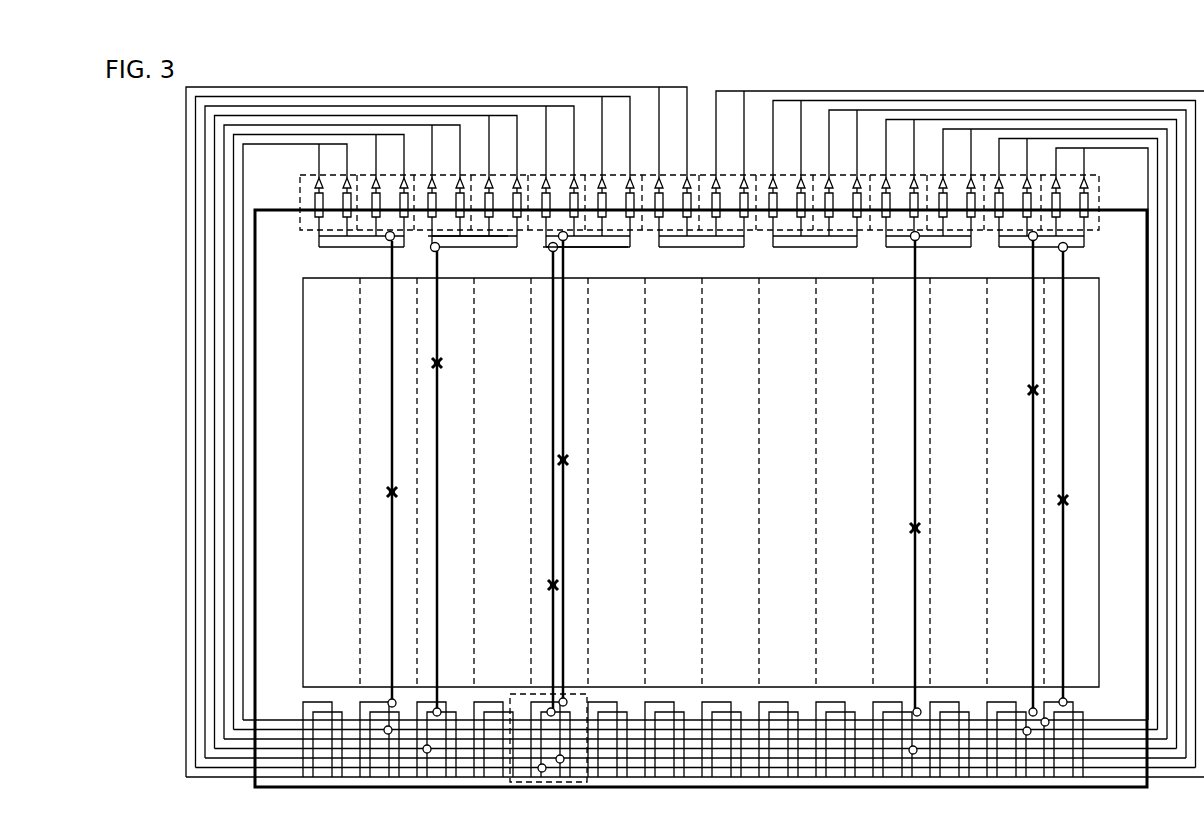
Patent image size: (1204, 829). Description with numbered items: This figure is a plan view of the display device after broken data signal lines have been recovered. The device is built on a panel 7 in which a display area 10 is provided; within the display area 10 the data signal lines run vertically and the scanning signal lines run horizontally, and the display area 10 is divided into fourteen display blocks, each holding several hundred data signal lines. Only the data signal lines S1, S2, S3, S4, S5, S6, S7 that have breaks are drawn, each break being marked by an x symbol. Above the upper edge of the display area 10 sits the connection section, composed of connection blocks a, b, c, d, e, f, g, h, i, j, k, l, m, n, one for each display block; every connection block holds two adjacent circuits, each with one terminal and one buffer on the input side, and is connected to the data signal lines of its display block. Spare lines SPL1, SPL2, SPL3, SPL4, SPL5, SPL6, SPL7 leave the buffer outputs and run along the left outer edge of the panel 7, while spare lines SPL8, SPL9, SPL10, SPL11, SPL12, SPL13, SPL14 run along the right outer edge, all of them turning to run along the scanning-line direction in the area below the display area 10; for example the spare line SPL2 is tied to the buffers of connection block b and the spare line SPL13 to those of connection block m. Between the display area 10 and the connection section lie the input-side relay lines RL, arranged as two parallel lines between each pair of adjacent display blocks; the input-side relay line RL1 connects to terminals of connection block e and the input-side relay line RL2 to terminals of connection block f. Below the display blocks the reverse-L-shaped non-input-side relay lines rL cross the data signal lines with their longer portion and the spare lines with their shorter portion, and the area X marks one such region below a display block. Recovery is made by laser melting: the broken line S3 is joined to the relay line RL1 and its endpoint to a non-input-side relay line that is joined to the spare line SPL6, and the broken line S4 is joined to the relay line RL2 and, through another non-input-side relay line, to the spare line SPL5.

The spare line SPL1 is at (250, 144).
The spare line SPL2 is at (312, 134).
The spare line SPL3 is at (375, 125).
The spare line SPL4 is at (437, 116).
The spare line SPL5 is at (500, 106).
The spare line SPL6 is at (563, 96).
The spare line SPL7 is at (612, 87).
The spare line SPL8 is at (768, 91).
The spare line SPL9 is at (810, 100).
The spare line SPL10 is at (878, 110).
The spare line SPL11 is at (950, 120).
The spare line SPL12 is at (1014, 129).
The spare line SPL13 is at (1082, 138).
The spare line SPL14 is at (1150, 148).
The connection block a is at (333, 201).
The connection block b is at (390, 201).
The connection block c is at (446, 201).
The connection block d is at (503, 201).
The connection block e is at (560, 201).
The connection block f is at (616, 201).
The connection block g is at (673, 201).
The connection block h is at (730, 201).
The connection block i is at (787, 201).
The connection block j is at (843, 201).
The connection block k is at (900, 201).
The connection block l is at (957, 201).
The connection block m is at (1013, 201).
The connection block n is at (1070, 201).
The panel 7 is at (1123, 209).
The input-side relay lines RL is at (312, 228).
The input-side relay line RL1 is at (551, 248).
The input-side relay line RL2 is at (612, 246).
The display area 10 is at (1101, 288).
The data signal line S1 is at (380, 472).
The data signal line S2 is at (448, 481).
The data signal line S3 is at (540, 481).
The data signal line S4 is at (573, 471).
The data signal line S5 is at (902, 476).
The data signal line S6 is at (1019, 476).
The data signal line S7 is at (1074, 476).
The non-input-side relay lines rL is at (326, 694).
The area X is at (549, 786).